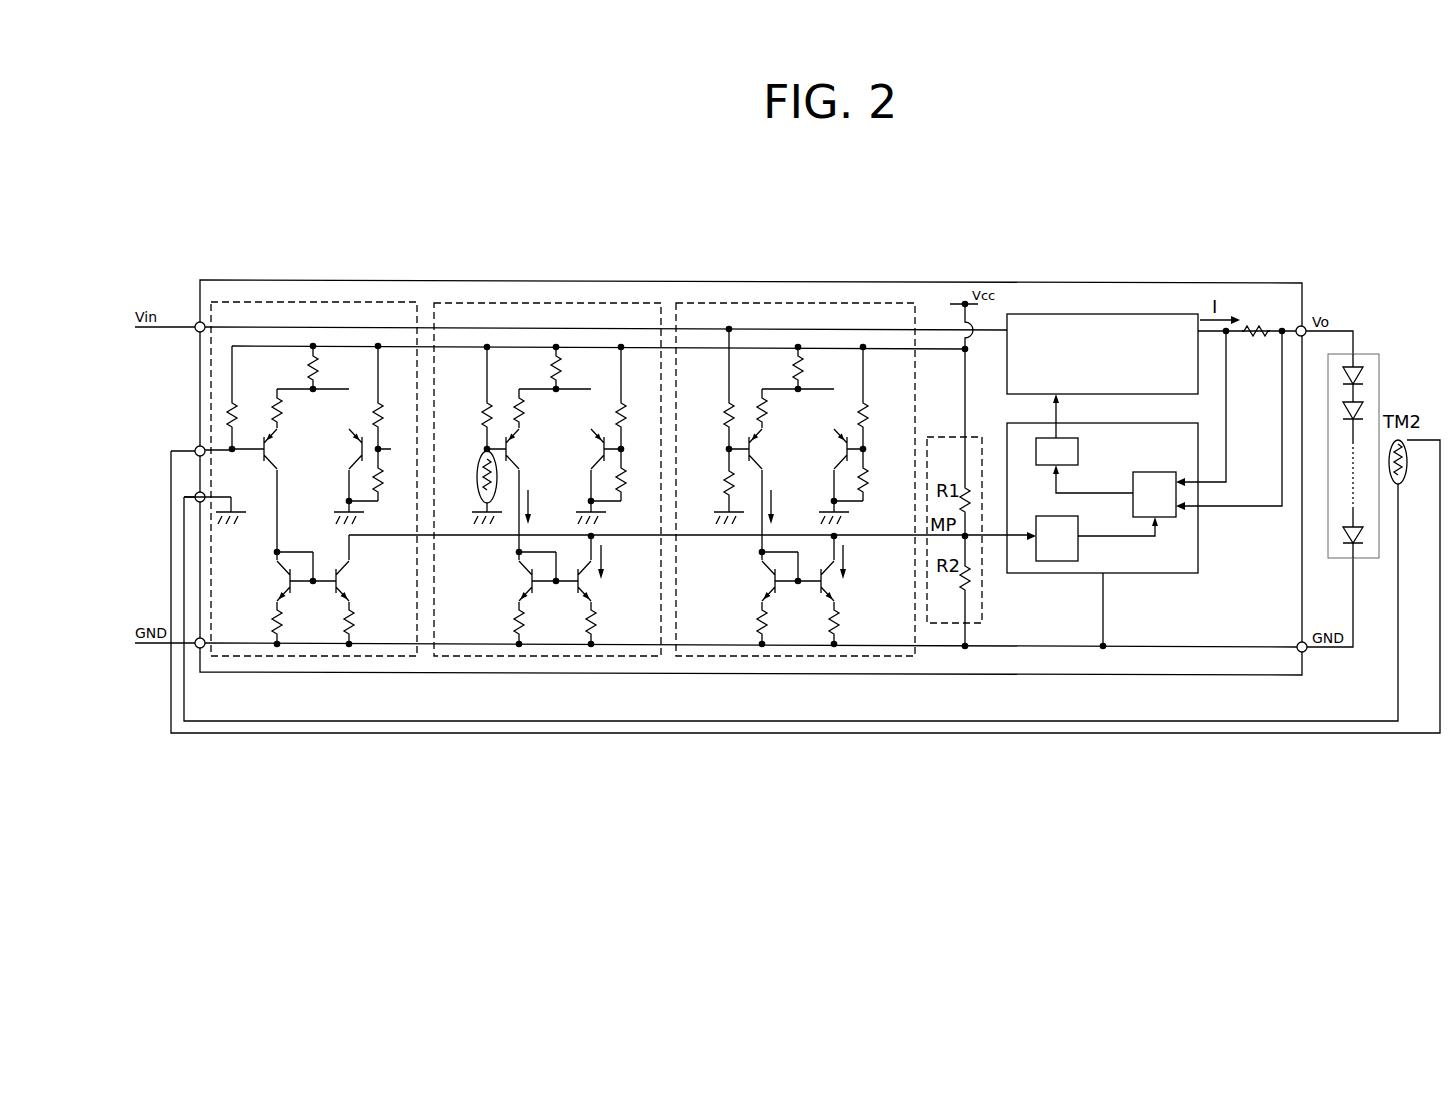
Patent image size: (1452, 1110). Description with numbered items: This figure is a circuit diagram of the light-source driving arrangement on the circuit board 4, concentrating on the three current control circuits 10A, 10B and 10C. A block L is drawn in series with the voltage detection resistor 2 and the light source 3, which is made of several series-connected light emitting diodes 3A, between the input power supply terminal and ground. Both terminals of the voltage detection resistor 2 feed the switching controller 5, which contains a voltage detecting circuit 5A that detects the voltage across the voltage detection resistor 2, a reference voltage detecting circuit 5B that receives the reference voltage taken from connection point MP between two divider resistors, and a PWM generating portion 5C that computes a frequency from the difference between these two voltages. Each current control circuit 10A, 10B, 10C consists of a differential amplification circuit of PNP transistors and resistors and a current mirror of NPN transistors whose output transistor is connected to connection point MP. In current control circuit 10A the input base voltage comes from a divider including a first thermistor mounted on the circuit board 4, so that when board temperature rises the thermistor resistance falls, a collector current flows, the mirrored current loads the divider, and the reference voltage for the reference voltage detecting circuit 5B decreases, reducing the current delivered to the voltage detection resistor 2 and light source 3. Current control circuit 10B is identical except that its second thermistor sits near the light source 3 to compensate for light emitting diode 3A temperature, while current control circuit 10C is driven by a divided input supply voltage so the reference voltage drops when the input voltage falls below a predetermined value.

The voltage detection resistor 2 is at (1258, 322).
The light source 3 is at (1379, 432).
The light emitting diode 3A is at (1365, 374).
The circuit board 4 is at (571, 280).
The switching controller 5 is at (1116, 521).
The voltage detecting circuit 5A is at (1170, 472).
The reference voltage detecting circuit 5B is at (1055, 562).
The PWM generating portion 5C is at (1036, 441).
The current control circuit 10A is at (555, 657).
The current control circuit 10B is at (310, 657).
The current control circuit 10C is at (797, 657).
The output stage L is at (1105, 313).